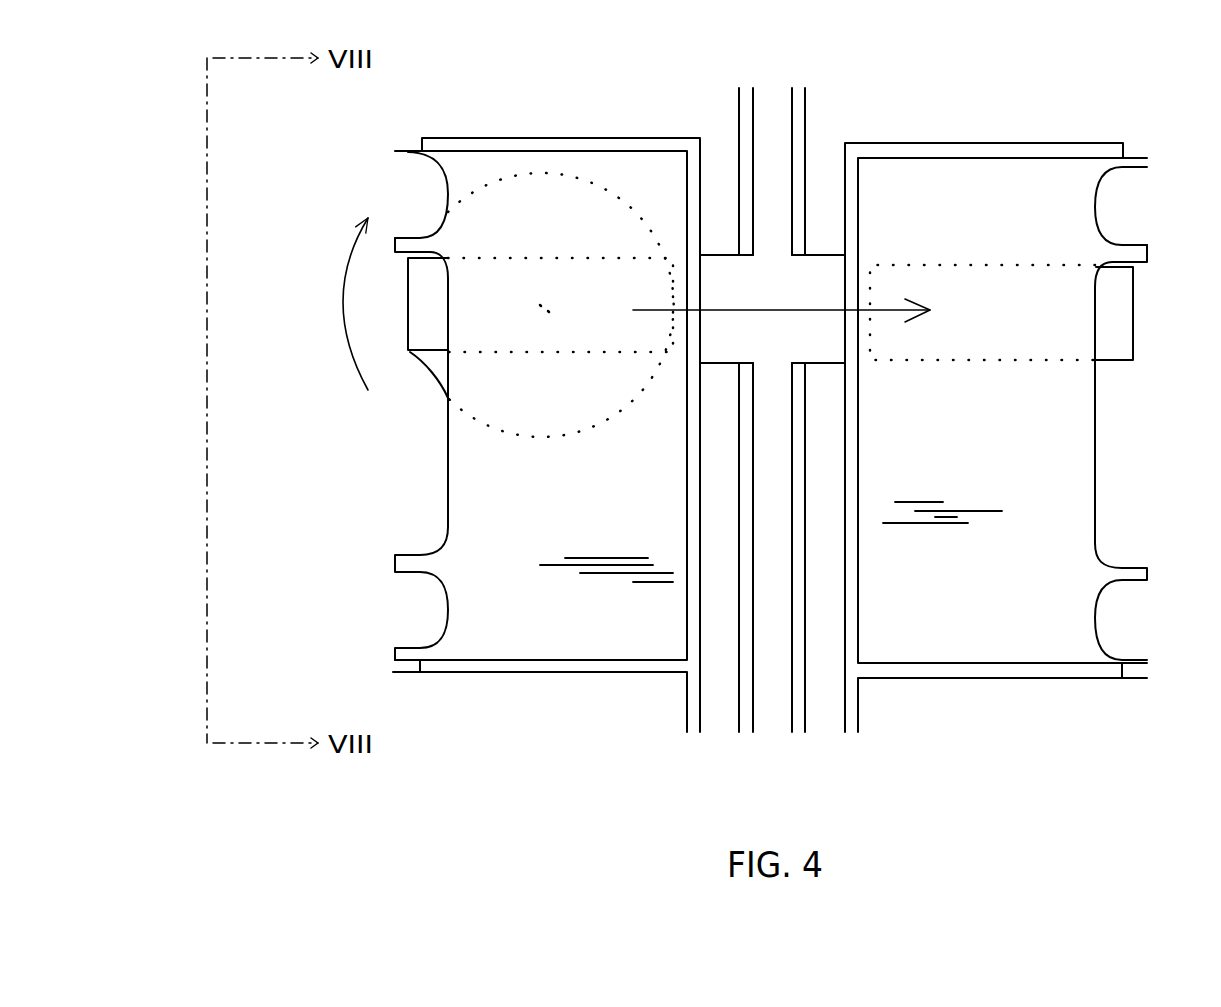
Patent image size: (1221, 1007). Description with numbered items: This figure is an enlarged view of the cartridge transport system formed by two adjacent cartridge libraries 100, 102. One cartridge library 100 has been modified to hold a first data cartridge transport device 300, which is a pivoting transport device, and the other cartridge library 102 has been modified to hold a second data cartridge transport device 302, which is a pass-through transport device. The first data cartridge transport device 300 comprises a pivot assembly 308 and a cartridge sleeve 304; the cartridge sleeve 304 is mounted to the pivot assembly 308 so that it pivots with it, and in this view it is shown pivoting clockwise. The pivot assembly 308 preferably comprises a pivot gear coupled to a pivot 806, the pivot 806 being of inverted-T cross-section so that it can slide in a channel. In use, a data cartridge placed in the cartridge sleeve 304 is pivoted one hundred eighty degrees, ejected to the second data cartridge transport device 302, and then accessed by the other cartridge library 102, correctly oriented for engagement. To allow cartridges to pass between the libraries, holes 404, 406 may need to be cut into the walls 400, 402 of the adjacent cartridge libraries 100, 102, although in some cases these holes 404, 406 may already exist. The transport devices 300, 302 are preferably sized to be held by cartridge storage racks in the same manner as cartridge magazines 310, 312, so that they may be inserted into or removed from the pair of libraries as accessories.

The cartridge library 100 is at (437, 752).
The cartridge library 102 is at (1095, 763).
The first data cartridge transport device 300 is at (492, 427).
The second data cartridge transport device 302 is at (950, 262).
The cartridge sleeve 304 is at (507, 257).
The pivot assembly 308 is at (570, 173).
The cartridge magazine 310 is at (587, 643).
The cartridge magazine 312 is at (1002, 648).
The wall 400 is at (753, 110).
The wall 402 is at (792, 113).
The hole 404 is at (750, 323).
The hole 406 is at (802, 300).
The pivot 806 is at (546, 310).